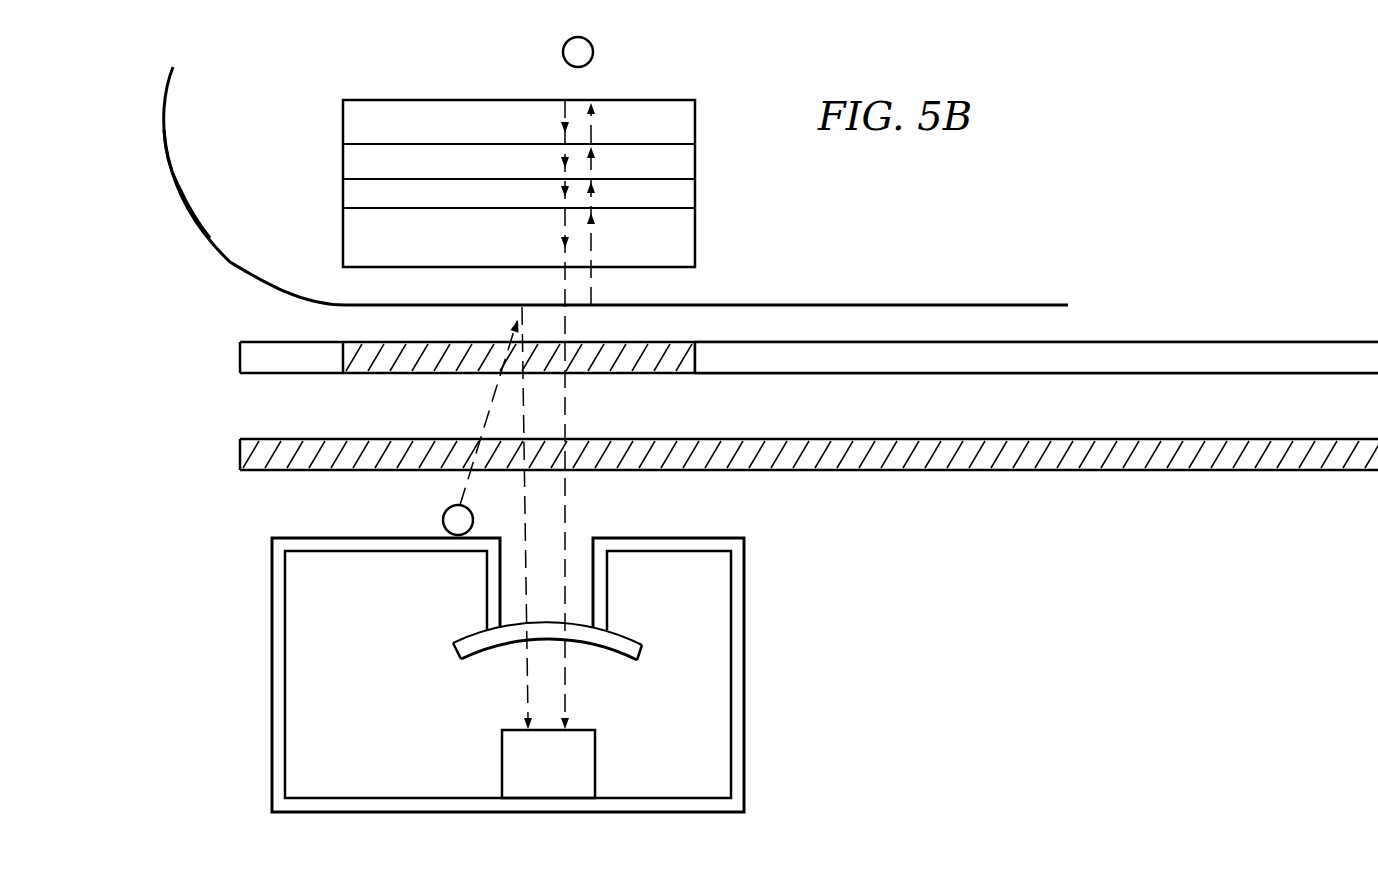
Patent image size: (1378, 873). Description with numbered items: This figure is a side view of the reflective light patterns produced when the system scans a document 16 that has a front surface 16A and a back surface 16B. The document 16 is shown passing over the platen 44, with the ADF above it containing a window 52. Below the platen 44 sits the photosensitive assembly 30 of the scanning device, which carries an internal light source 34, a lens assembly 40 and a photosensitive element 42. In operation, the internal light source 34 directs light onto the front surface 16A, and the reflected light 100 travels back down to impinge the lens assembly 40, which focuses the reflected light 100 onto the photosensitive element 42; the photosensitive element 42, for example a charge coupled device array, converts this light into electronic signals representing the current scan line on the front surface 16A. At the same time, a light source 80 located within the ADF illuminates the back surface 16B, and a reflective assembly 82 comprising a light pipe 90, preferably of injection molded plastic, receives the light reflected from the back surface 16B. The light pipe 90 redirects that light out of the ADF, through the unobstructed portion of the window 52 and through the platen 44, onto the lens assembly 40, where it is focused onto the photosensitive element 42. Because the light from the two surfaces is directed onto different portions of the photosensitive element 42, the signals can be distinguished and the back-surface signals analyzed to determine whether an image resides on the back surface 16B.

The document 16 is at (152, 125).
The front surface 16A is at (186, 208).
The back surface 16B is at (178, 178).
The photosensitive assembly 30 is at (778, 711).
The internal light source 34 is at (443, 518).
The lens assembly 40 is at (455, 650).
The photosensitive element 42 is at (597, 766).
The platen 44 is at (932, 473).
The window 52 is at (443, 372).
The light source 80 is at (562, 51).
The reflective assembly 82 is at (726, 203).
The light pipe 90 is at (697, 157).
The reflected light 100 is at (566, 482).